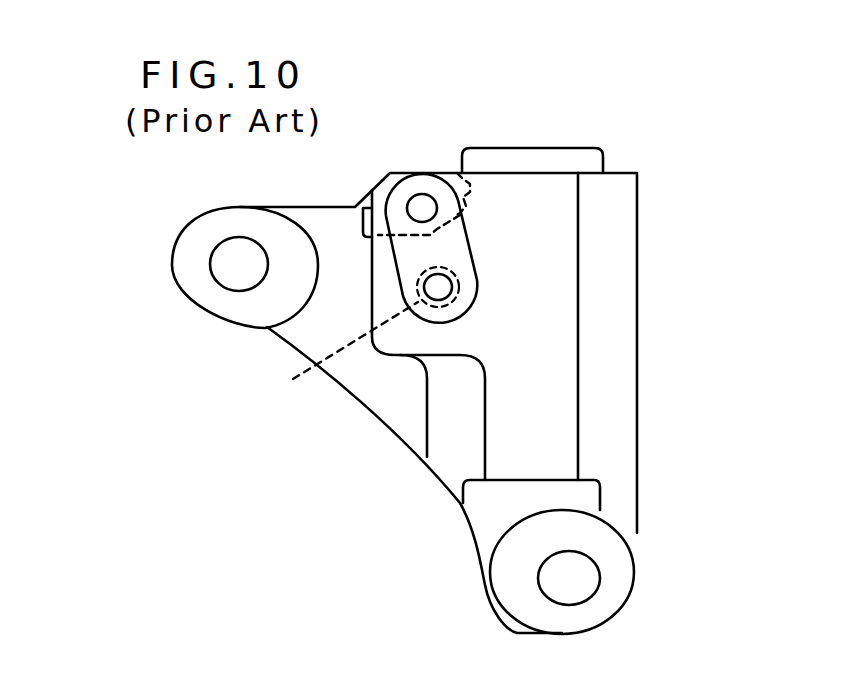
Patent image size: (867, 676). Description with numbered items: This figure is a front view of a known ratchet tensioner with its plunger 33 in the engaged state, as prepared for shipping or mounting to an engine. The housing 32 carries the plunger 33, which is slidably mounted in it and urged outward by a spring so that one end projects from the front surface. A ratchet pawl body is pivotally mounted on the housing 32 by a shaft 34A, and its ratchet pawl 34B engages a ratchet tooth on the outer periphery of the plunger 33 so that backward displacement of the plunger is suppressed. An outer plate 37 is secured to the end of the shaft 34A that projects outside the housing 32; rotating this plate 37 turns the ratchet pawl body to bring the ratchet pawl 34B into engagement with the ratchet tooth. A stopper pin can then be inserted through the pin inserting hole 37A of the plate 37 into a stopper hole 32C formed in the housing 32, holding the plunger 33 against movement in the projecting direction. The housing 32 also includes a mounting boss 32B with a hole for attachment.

The housing 32 is at (551, 420).
The mounting boss 32B is at (222, 253).
The stopper hole 32C is at (324, 350).
The plunger 33 is at (550, 158).
The shaft 34A is at (418, 200).
The ratchet pawl 34B is at (455, 170).
The plate 37 is at (455, 249).
The pin inserting hole 37A is at (448, 286).